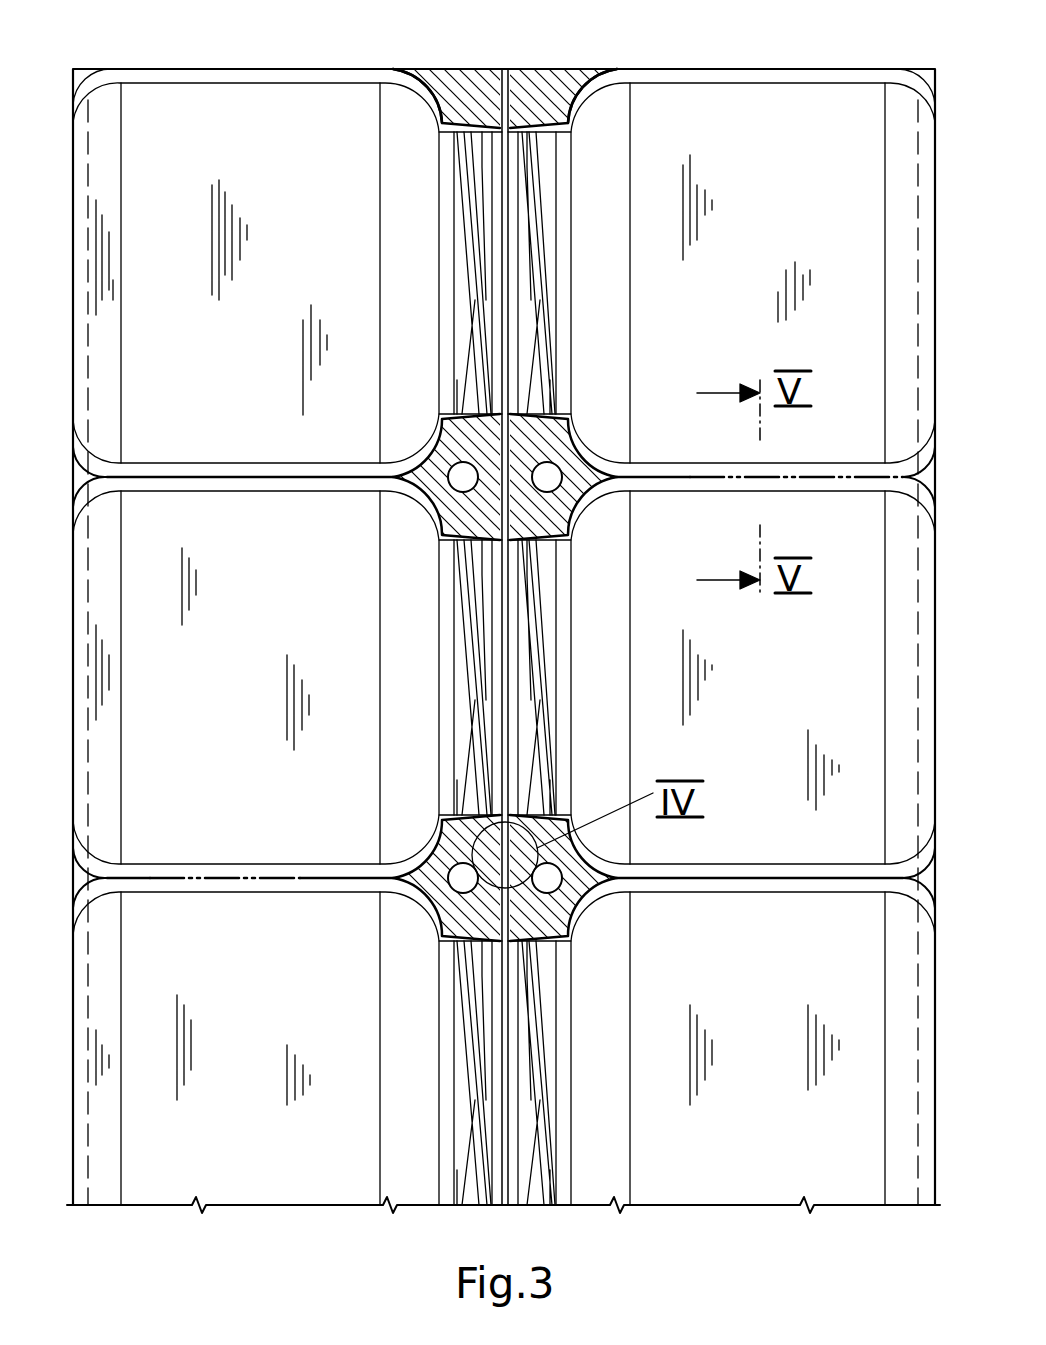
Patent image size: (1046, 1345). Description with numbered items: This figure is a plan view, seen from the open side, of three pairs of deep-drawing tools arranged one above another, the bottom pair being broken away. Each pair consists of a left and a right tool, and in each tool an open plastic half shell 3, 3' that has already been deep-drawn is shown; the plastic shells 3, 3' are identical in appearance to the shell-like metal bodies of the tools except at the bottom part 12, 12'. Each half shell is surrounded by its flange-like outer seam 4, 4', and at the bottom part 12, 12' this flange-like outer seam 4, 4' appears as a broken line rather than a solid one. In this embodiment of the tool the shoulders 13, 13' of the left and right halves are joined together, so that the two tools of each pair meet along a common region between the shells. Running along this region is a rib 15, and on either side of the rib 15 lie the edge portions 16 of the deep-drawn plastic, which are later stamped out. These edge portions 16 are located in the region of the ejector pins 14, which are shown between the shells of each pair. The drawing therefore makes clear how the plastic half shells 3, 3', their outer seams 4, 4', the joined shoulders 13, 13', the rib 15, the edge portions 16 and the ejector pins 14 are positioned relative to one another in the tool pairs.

The open plastic half shell 3 is at (211, 642).
The open plastic half shell 3' is at (761, 630).
The flange-like outer seam 4 is at (286, 637).
The flange-like outer seam 4' is at (722, 611).
The bottom part 12 is at (123, 688).
The bottom part 12' is at (917, 611).
The shoulder 13 is at (410, 610).
The shoulder 13' is at (600, 610).
The ejector pins 14 is at (548, 478).
The rib 15 is at (505, 493).
The edge portions 16 is at (420, 95).